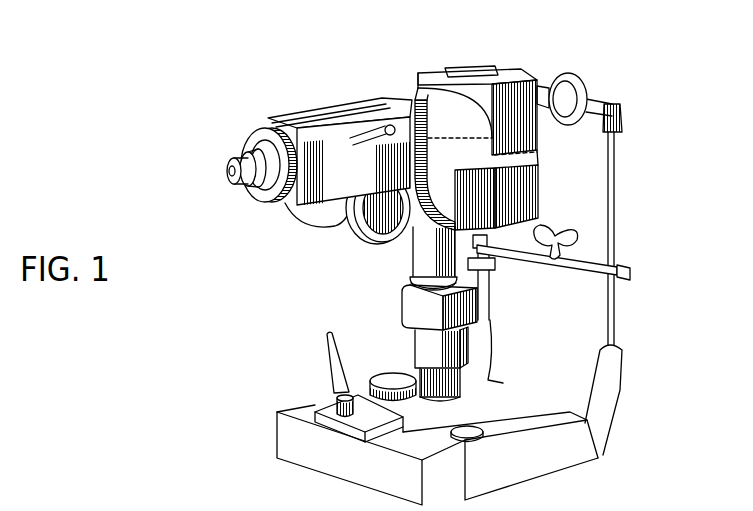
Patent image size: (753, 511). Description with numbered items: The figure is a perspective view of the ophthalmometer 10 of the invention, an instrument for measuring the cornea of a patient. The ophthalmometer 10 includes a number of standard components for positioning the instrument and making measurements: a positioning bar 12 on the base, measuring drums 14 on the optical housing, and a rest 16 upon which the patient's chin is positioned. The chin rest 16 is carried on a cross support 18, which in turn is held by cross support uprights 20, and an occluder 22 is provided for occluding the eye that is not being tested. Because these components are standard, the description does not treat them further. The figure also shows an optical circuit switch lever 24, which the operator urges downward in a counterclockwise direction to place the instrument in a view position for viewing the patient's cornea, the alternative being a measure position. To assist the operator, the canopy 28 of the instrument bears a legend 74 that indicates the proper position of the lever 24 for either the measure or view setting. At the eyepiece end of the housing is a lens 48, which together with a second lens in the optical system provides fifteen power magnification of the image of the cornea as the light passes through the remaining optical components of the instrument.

The ophthalmometer 10 is at (300, 312).
The positioning bar 12 is at (336, 372).
The measuring drums 14 is at (357, 238).
The rest 16 is at (550, 227).
The cross support 18 is at (628, 270).
The cross support uprights 20 is at (608, 197).
The occluder 22 is at (583, 84).
The optical circuit switch lever 24 is at (408, 102).
The canopy 28 is at (313, 118).
The lens 48 is at (243, 149).
The legend 74 is at (333, 156).